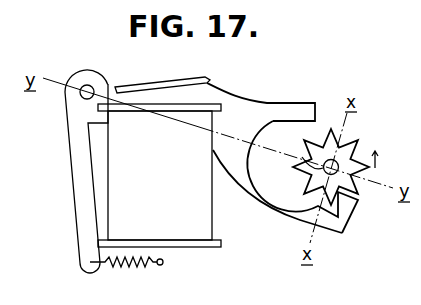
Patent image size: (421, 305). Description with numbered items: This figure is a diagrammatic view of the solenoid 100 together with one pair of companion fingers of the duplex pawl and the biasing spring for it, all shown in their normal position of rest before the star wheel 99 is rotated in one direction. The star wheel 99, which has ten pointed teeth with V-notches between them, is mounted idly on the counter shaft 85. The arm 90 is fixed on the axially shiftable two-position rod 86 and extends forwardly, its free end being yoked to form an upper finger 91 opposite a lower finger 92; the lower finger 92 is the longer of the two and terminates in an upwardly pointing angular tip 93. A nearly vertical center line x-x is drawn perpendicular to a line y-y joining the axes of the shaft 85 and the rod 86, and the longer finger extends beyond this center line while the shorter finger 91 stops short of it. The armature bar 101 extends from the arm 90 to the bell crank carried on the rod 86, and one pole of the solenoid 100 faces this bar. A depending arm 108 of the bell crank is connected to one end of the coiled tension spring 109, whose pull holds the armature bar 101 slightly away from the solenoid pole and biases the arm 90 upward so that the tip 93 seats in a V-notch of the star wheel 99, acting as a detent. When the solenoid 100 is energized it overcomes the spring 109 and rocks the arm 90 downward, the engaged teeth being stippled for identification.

The counter shaft 85 is at (307, 157).
The two-position rod 86 is at (82, 84).
The arm 90 is at (243, 97).
The upper finger 91 is at (292, 102).
The lower finger 92 is at (283, 212).
The angular tip 93 is at (348, 214).
The star wheel 99 is at (358, 145).
The solenoid 100 is at (198, 231).
The armature bar 101 is at (172, 77).
The depending arm 108 is at (81, 229).
The coiled tension spring 109 is at (137, 267).